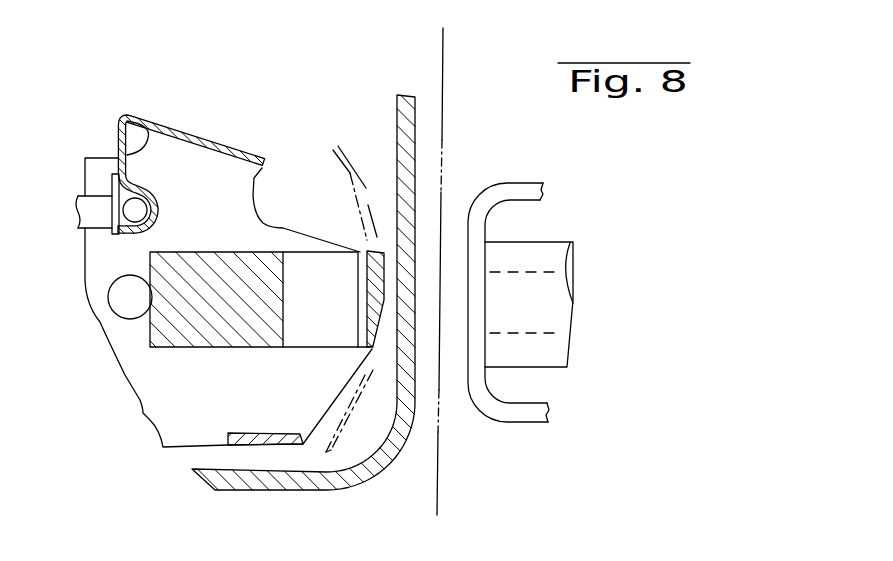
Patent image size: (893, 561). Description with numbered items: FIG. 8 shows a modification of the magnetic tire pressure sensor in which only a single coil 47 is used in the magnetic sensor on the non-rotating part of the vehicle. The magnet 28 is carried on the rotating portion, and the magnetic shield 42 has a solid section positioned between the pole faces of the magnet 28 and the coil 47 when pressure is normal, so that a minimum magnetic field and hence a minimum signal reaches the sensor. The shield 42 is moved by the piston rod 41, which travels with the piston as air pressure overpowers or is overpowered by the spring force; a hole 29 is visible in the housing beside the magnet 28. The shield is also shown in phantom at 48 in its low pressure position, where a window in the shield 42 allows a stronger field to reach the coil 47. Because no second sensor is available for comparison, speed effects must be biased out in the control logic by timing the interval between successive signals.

The magnet 28 is at (203, 252).
The hole 29 is at (118, 310).
The piston rod 41 is at (90, 218).
The magnetic shield 42 is at (213, 140).
The single coil 47 is at (553, 247).
The low pressure position of shield 48 is at (358, 180).